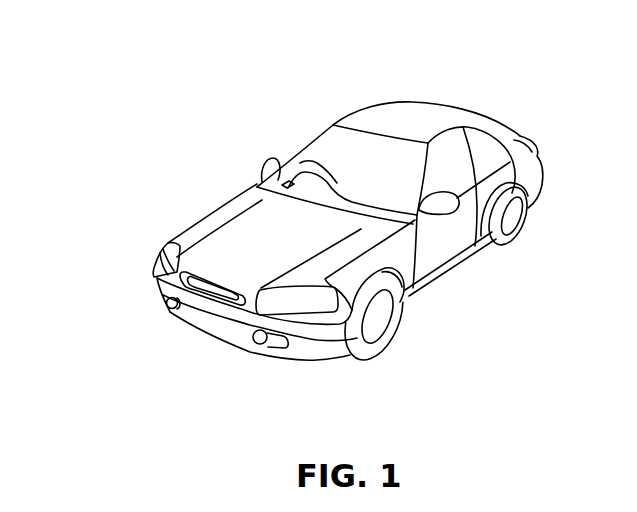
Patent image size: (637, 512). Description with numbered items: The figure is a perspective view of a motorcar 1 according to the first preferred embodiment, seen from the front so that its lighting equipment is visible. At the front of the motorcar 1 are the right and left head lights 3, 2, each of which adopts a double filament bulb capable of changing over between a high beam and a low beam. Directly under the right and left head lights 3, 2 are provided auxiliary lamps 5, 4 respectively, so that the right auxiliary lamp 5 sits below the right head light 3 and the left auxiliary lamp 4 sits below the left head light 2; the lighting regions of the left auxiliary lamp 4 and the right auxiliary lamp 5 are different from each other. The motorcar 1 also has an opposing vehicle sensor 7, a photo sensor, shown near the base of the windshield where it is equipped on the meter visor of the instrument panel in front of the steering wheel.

The motorcar 1 is at (333, 103).
The left head light 2 is at (300, 305).
The right head light 3 is at (160, 247).
The left auxiliary lamp 4 is at (258, 344).
The right auxiliary lamp 5 is at (163, 303).
The opposing vehicle sensor 7 is at (287, 181).